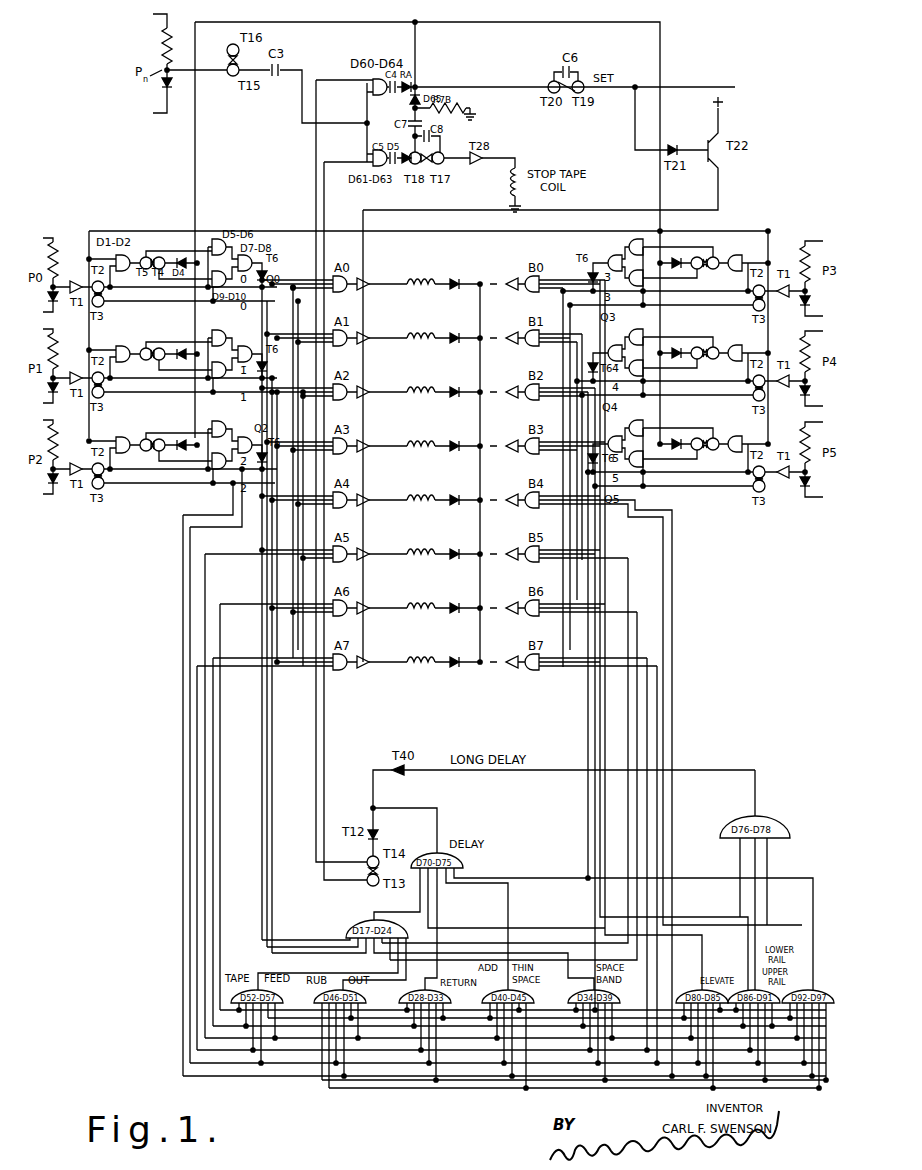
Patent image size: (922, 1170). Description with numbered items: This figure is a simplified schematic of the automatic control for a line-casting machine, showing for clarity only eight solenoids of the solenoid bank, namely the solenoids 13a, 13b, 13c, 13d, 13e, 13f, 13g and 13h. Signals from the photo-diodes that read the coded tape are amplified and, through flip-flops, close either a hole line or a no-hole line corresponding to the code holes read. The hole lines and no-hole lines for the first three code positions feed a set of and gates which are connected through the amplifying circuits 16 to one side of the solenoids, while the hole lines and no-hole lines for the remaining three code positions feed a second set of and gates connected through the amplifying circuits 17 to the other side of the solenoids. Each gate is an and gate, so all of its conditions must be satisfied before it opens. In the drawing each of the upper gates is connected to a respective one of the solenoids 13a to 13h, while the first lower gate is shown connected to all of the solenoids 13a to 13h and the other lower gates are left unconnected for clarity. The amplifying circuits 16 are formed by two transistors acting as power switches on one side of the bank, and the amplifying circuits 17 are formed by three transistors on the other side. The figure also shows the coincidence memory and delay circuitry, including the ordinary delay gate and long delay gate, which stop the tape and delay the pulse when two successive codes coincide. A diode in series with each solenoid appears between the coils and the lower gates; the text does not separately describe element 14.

The solenoid 13a is at (432, 281).
The solenoid 13b is at (428, 335).
The solenoid 13c is at (432, 389).
The solenoid 13d is at (432, 443).
The solenoid 13e is at (426, 497).
The solenoid 13f is at (426, 551).
The solenoid 13g is at (426, 605).
The solenoid 13h is at (426, 659).
The diode 14 is at (458, 290).
The amplifying circuits 16 is at (367, 332).
The amplifying circuits 17 is at (507, 330).